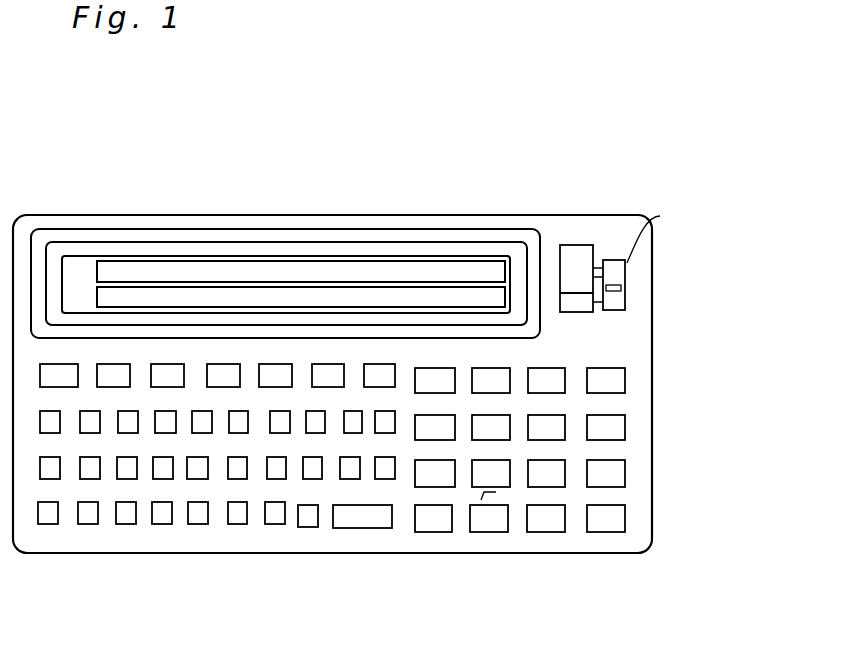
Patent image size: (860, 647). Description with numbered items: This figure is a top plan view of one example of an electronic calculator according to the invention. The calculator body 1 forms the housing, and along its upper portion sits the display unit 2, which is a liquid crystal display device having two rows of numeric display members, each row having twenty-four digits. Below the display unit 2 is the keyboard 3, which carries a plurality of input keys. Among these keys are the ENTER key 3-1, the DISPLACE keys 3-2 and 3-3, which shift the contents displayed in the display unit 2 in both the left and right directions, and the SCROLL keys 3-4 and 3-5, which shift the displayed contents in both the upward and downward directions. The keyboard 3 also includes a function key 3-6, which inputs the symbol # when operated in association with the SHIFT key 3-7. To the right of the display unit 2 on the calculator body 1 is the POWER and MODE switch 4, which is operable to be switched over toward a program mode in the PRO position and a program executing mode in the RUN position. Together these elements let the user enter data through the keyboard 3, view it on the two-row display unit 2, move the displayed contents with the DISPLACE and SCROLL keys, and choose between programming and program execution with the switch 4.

The calculator body 1 is at (572, 230).
The display unit 2 is at (487, 275).
The keyboard 3 is at (633, 402).
The ENTER key 3-1 is at (366, 530).
The DISPLACE key 3-2 is at (343, 366).
The DISPLACE key 3-3 is at (292, 365).
The SCROLL key 3-4 is at (235, 365).
The SCROLL key 3-5 is at (173, 364).
The function key 3-6 is at (131, 406).
The SHIFT key 3-7 is at (118, 364).
The POWER and MODE switch 4 is at (617, 272).